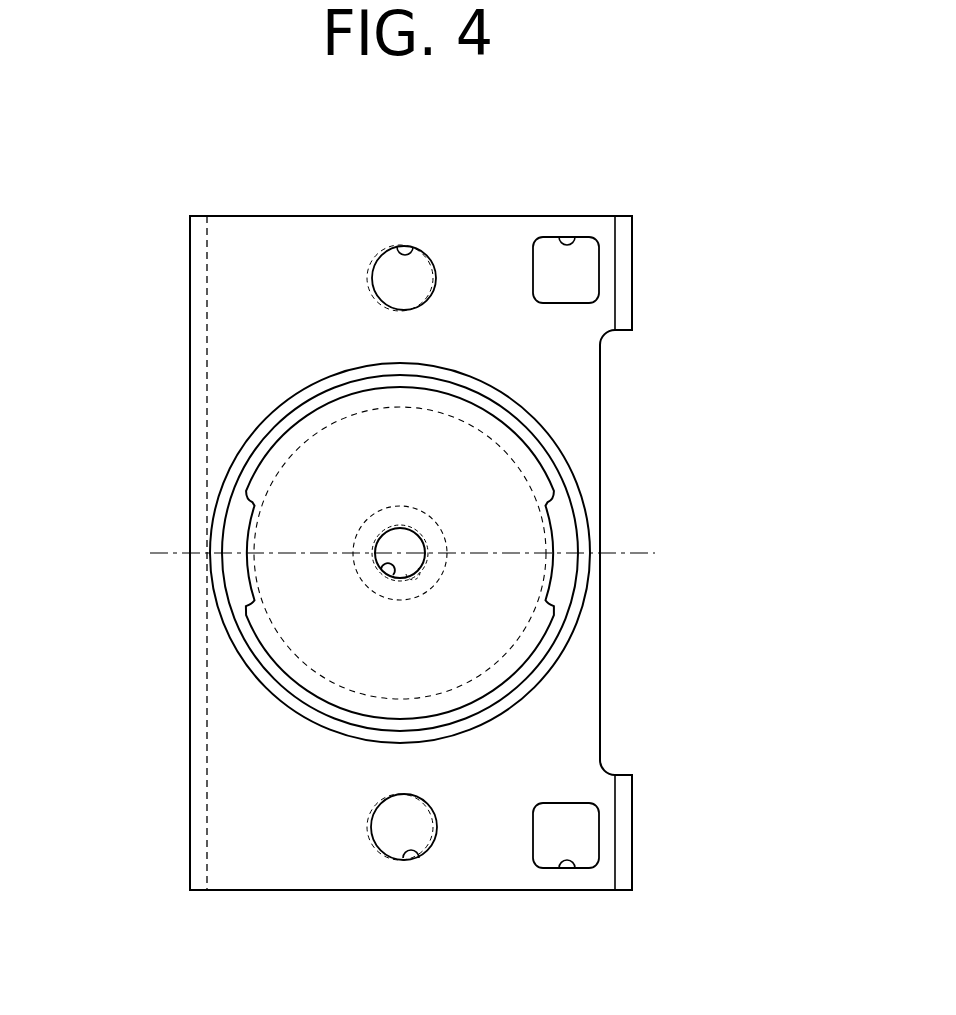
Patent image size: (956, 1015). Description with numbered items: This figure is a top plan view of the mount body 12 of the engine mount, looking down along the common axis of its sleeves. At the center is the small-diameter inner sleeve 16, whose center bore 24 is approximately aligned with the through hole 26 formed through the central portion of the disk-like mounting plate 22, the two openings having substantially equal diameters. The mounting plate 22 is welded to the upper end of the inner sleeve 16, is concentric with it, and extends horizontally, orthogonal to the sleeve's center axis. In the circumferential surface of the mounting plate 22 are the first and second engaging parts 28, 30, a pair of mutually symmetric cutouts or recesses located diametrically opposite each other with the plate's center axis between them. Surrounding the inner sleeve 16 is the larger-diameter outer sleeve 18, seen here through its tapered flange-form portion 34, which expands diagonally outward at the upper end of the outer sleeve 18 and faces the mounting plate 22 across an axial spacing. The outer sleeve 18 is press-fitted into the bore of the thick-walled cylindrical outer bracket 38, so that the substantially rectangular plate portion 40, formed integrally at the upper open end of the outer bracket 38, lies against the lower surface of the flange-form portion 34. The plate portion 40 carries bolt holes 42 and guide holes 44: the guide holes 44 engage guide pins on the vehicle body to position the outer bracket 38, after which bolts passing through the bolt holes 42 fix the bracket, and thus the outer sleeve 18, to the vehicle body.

The mount body 12 is at (496, 508).
The inner sleeve 16 is at (420, 522).
The outer sleeve 18 is at (484, 553).
The tapered flange-form portion 34 is at (585, 517).
The mounting plate 22 is at (297, 466).
The center bore 24 is at (433, 565).
The through hole 26 is at (388, 573).
The first engaging part 28 is at (556, 585).
The second engaging part 30 is at (247, 588).
The outer bracket 38 is at (184, 281).
The plate portion 40 is at (278, 228).
The bolt holes 42 is at (405, 247).
The guide holes 44 is at (567, 237).